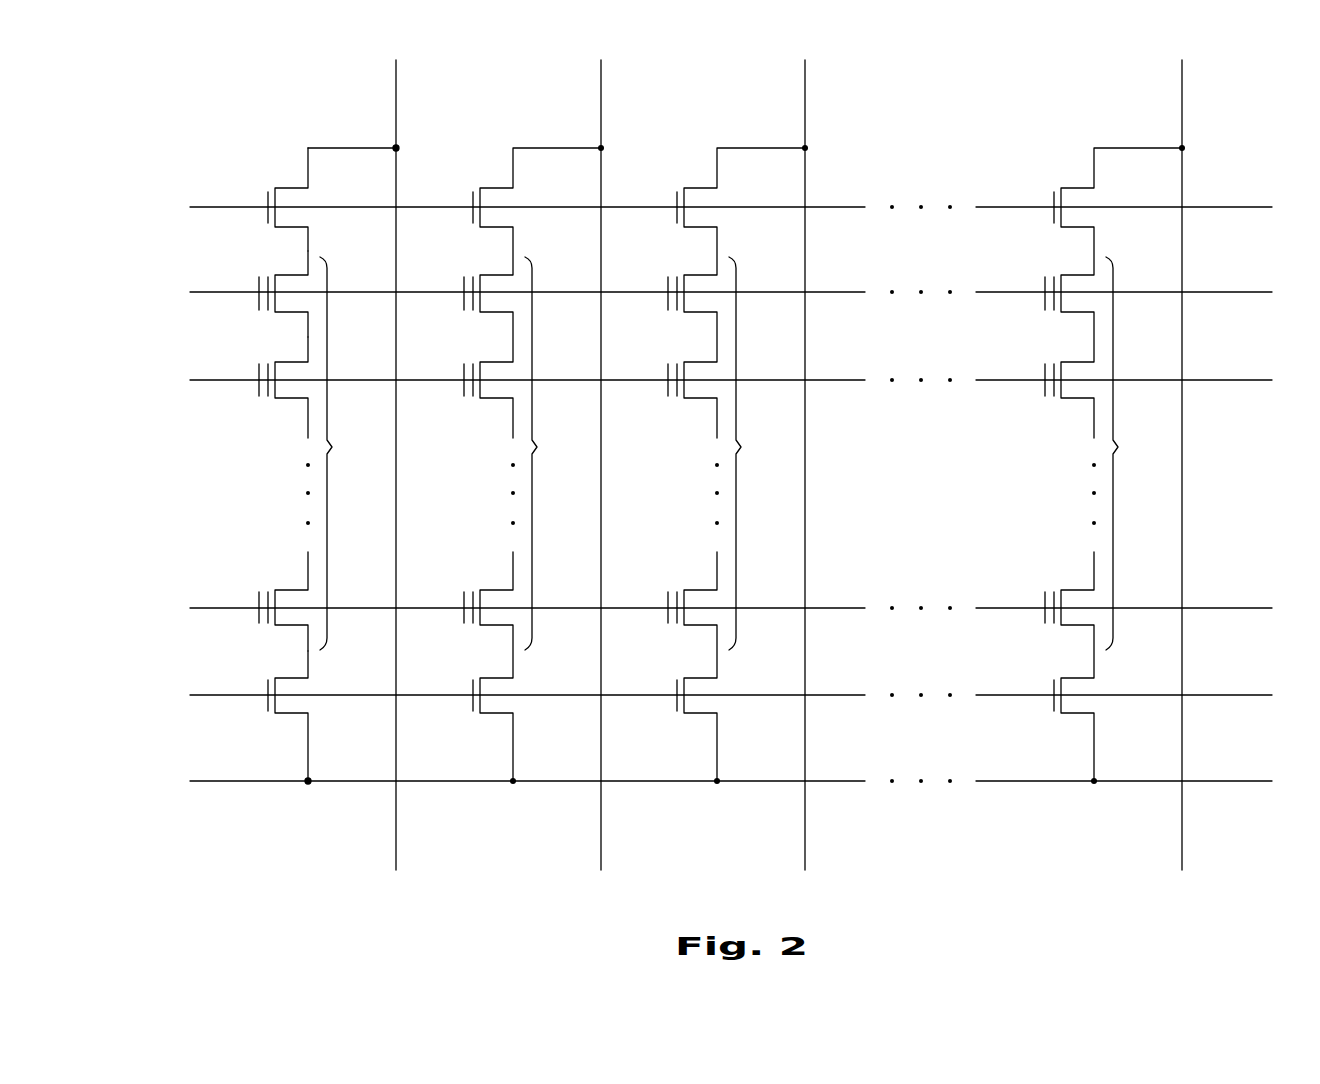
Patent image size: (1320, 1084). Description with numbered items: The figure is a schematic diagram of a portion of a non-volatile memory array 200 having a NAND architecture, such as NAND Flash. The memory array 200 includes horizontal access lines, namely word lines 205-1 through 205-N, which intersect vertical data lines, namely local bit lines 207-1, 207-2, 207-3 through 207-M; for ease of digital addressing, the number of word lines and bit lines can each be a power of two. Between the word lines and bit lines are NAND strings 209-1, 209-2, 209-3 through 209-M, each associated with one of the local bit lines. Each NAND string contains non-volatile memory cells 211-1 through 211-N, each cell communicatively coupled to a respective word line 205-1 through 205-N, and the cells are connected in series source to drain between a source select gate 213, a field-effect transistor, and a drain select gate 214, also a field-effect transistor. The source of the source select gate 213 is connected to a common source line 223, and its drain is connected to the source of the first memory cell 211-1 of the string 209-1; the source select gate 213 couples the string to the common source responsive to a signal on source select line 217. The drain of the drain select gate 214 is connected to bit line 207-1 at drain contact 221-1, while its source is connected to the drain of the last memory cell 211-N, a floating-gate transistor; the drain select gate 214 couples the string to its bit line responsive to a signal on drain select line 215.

The non-volatile memory array 200 is at (232, 97).
The drain select line 215 is at (215, 206).
The drain contact 221-1 is at (396, 148).
The drain select gate 214 is at (292, 228).
The word line 205-N is at (200, 292).
The non-volatile memory cell 211-N is at (292, 312).
The NAND string 209-1 is at (332, 447).
The NAND string 209-2 is at (537, 447).
The NAND string 209-3 is at (741, 447).
The NAND string 209-M is at (1118, 447).
The word line 205-1 is at (200, 608).
The non-volatile memory cell 211-1 is at (292, 625).
The source select line 217 is at (200, 695).
The source select gate 213 is at (292, 713).
The common source line 223 is at (200, 781).
The local bit line 207-1 is at (396, 845).
The local bit line 207-2 is at (601, 845).
The local bit line 207-3 is at (805, 845).
The local bit line 207-M is at (1182, 845).